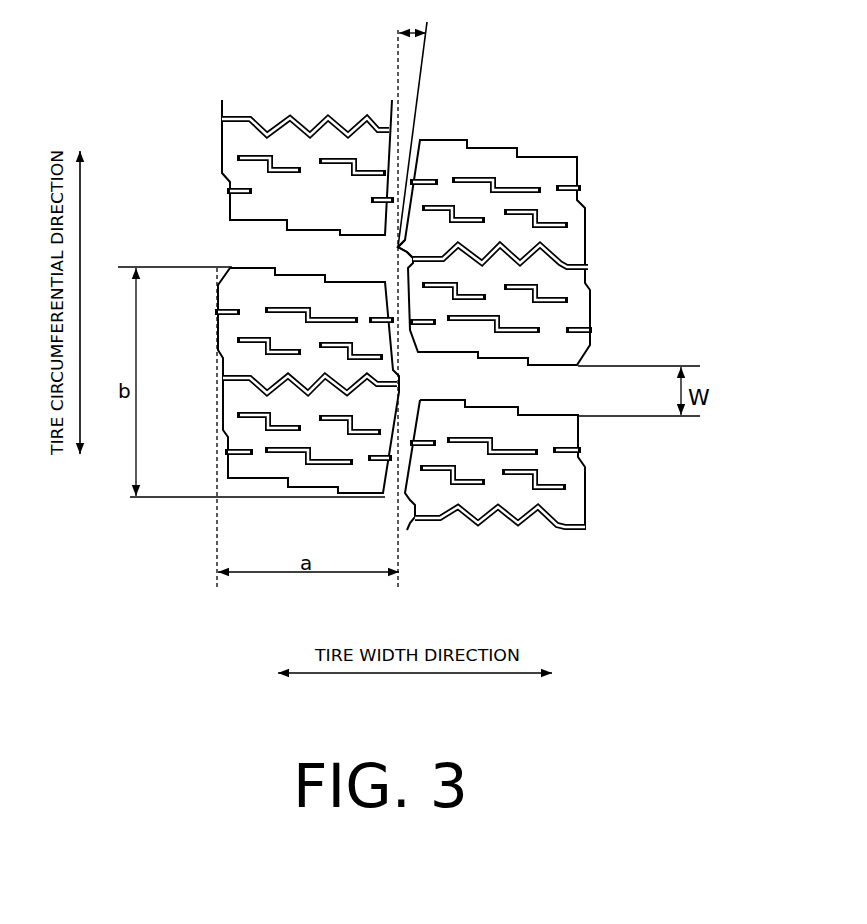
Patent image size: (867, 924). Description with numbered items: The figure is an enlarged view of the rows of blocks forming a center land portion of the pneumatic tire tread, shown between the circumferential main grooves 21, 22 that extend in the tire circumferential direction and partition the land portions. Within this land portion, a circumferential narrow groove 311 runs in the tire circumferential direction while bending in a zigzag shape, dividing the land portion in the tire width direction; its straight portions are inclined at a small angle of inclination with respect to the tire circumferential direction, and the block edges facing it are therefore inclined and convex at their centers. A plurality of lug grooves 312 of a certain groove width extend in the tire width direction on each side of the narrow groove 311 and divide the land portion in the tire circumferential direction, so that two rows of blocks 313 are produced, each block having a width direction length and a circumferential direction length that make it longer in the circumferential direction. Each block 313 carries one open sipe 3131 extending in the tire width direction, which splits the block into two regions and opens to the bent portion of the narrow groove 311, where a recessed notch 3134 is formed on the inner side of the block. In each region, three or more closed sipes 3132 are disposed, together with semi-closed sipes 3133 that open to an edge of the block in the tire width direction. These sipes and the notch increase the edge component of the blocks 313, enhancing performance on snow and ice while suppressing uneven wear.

The circumferential main groove 21 is at (602, 162).
The circumferential main groove 22 is at (210, 107).
The circumferential narrow groove 311 is at (403, 157).
The lug groove 312 is at (235, 247).
The block 313 is at (413, 300).
The open sipe 3131 is at (567, 257).
The closed sipe 3132 is at (455, 178).
The semi-closed sipe 3133 is at (430, 180).
The notch 3134 is at (397, 247).